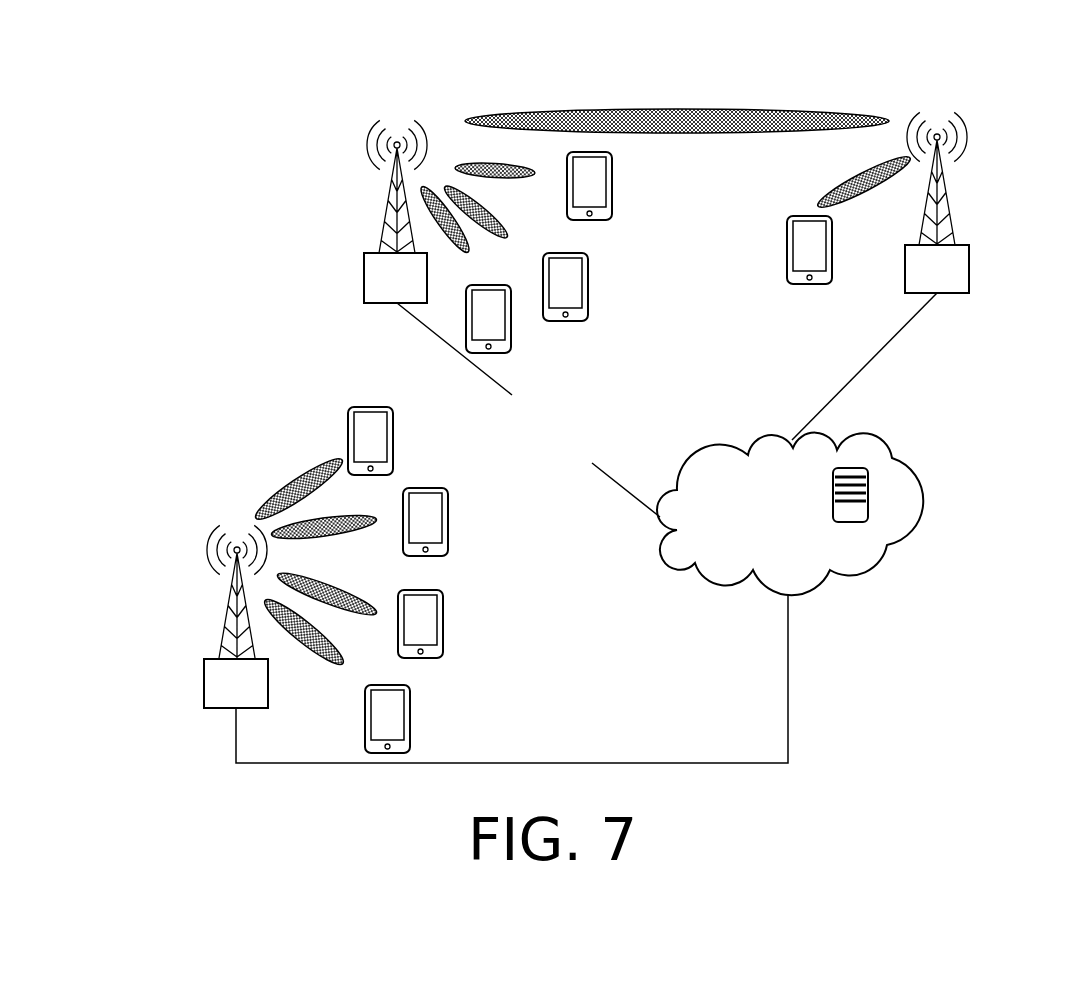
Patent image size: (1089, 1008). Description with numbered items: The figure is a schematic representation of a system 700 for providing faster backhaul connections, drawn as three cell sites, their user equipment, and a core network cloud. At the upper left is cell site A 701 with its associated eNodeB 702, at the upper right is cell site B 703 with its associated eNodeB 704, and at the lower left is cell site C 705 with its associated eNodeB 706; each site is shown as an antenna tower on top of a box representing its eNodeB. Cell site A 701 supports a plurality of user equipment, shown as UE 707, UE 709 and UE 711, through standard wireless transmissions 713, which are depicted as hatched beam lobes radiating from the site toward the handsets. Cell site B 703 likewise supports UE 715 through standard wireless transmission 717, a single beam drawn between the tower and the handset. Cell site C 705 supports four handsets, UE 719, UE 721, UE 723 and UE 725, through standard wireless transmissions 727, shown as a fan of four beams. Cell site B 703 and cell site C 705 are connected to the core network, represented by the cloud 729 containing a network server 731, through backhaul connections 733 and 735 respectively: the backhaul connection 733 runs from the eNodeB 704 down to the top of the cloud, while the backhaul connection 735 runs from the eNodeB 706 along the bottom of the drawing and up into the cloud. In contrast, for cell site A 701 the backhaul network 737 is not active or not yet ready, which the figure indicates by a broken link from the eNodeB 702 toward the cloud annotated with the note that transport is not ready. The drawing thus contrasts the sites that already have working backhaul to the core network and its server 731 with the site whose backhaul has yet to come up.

The system 700 is at (222, 113).
The cell site A 701 is at (365, 145).
The eNodeB 702 is at (364, 280).
The cell site B 703 is at (967, 137).
The eNodeB 704 is at (969, 268).
The cell site C 705 is at (204, 550).
The eNodeB 706 is at (204, 685).
The UE 707 is at (612, 185).
The UE 709 is at (586, 282).
The UE 711 is at (488, 353).
The standard wireless transmissions 713 is at (467, 252).
The UE 715 is at (811, 280).
The standard wireless transmission 717 is at (857, 174).
The UE 719 is at (393, 437).
The UE 721 is at (448, 520).
The UE 723 is at (442, 618).
The UE 725 is at (408, 712).
The standard wireless transmissions 727 is at (305, 495).
The network cloud 729 is at (923, 515).
The network server 731 is at (833, 495).
The backhaul connection 733 is at (862, 378).
The backhaul connection 735 is at (655, 762).
The backhaul network 737 is at (595, 462).